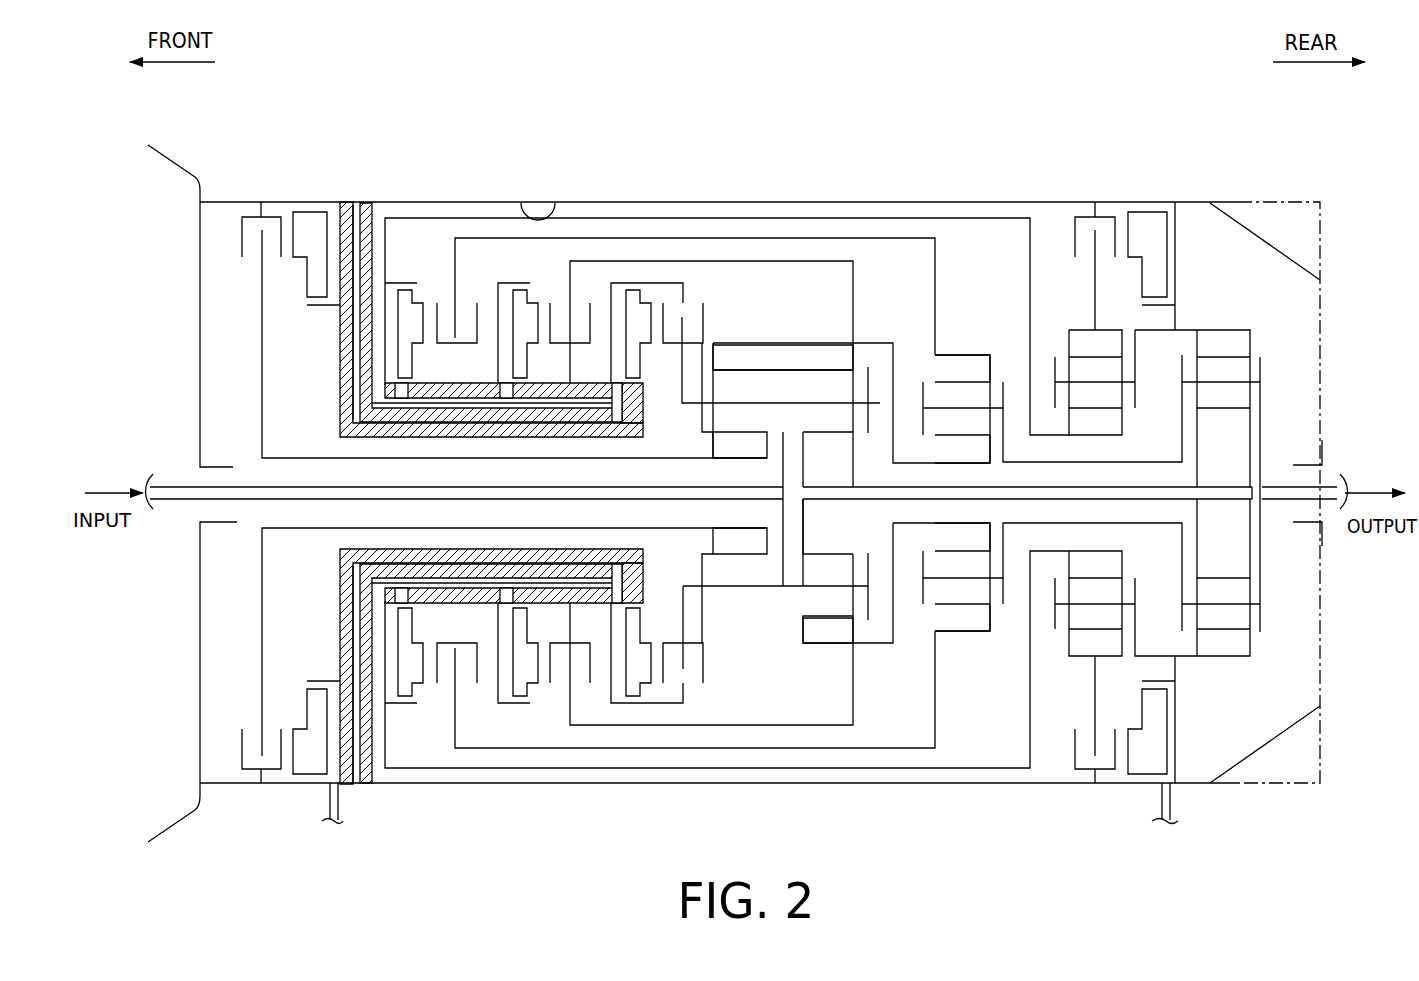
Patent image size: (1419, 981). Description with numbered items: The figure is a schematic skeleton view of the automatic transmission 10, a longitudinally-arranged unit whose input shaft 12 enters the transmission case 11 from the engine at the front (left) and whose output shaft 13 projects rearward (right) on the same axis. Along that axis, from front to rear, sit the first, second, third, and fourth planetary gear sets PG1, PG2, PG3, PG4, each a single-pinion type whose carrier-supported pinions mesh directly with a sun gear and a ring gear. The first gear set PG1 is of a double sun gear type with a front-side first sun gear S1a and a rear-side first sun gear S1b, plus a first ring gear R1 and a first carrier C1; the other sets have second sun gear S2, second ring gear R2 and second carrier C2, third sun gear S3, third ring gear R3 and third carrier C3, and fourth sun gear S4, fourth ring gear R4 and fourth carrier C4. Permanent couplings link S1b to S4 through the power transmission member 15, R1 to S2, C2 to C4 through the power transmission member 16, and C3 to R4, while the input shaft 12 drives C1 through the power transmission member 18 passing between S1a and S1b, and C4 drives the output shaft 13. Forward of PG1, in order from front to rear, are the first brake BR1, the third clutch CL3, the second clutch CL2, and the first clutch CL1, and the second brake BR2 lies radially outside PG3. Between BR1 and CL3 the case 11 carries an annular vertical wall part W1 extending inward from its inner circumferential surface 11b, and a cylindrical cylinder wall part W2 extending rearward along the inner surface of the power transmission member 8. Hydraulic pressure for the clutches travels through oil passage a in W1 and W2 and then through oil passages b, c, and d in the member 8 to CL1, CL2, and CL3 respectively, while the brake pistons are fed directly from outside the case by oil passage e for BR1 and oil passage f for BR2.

The automatic transmission 10 is at (1302, 188).
The transmission case 11 is at (907, 196).
The inner circumferential surface 11b is at (555, 202).
The input shaft 12 is at (182, 486).
The output shaft 13 is at (1313, 486).
The power transmission member 15 is at (900, 483).
The power transmission member 16 is at (1045, 465).
The power transmission member 18 is at (786, 568).
The power transmission member 8 is at (563, 393).
The oil passage a is at (350, 403).
The oil passage b is at (623, 390).
The oil passage c is at (508, 398).
The oil passage d is at (405, 398).
The oil passage e is at (338, 805).
The oil passage f is at (1170, 802).
The vertical wall part W1 is at (368, 227).
The cylinder wall part W2 is at (440, 437).
The first brake BR1 is at (252, 262).
The second brake BR2 is at (1068, 237).
The first clutch CL1 is at (700, 292).
The second clutch CL2 is at (558, 300).
The third clutch CL3 is at (445, 300).
The first planetary gear set PG1 is at (762, 333).
The second planetary gear set PG2 is at (968, 350).
The third planetary gear set PG3 is at (1078, 325).
The fourth planetary gear set PG4 is at (1213, 322).
The first ring gear R1 is at (783, 494).
The second ring gear R2 is at (962, 493).
The third ring gear R3 is at (1095, 482).
The fourth ring gear R4 is at (1223, 482).
The front-side first sun gear S1a is at (740, 493).
The rear-side first sun gear S1b is at (828, 493).
The second sun gear S2 is at (962, 493).
The third sun gear S3 is at (1095, 493).
The fourth sun gear S4 is at (1223, 493).
The first carrier C1 is at (782, 493).
The second carrier C2 is at (1052, 493).
The third carrier C3 is at (1126, 493).
The fourth carrier C4 is at (1232, 482).